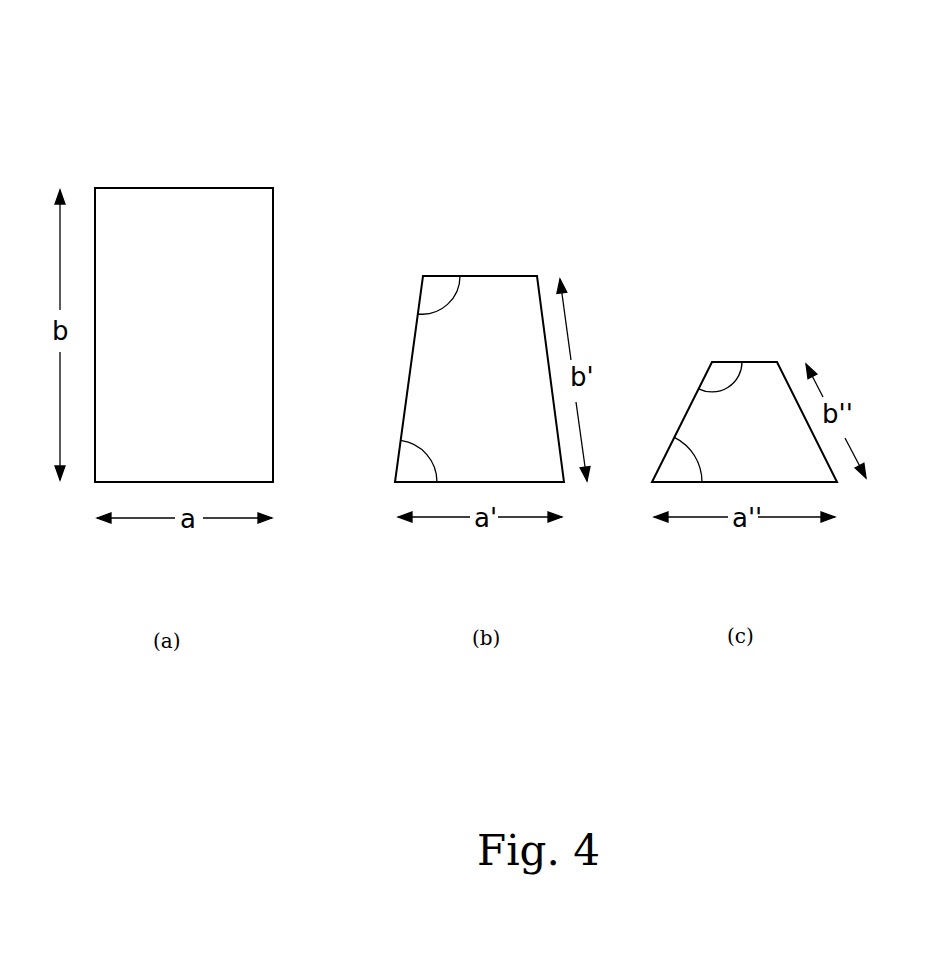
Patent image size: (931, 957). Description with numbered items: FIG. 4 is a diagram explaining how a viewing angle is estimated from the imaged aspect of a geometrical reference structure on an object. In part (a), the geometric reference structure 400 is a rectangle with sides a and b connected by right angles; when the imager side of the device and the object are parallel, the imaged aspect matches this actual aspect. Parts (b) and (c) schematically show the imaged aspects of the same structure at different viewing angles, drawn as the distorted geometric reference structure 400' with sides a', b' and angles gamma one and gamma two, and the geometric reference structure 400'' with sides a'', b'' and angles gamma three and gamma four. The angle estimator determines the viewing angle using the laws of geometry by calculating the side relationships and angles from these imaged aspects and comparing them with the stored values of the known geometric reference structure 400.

The geometric reference structure 400 is at (184, 246).
The imaged aspect of geometric reference structure 400' is at (479, 280).
The imaged aspect of geometric reference structure 400'' is at (744, 314).